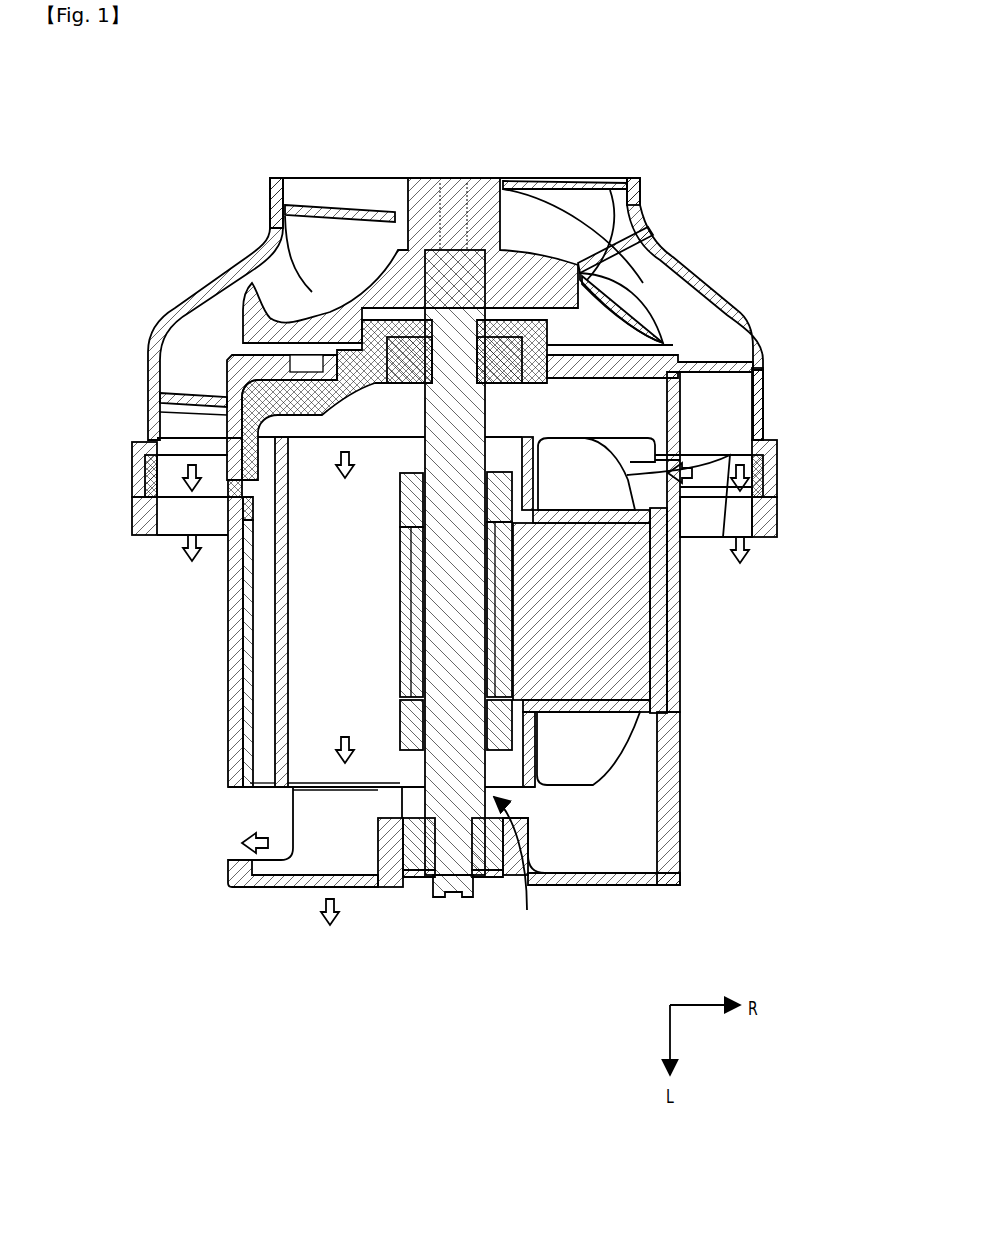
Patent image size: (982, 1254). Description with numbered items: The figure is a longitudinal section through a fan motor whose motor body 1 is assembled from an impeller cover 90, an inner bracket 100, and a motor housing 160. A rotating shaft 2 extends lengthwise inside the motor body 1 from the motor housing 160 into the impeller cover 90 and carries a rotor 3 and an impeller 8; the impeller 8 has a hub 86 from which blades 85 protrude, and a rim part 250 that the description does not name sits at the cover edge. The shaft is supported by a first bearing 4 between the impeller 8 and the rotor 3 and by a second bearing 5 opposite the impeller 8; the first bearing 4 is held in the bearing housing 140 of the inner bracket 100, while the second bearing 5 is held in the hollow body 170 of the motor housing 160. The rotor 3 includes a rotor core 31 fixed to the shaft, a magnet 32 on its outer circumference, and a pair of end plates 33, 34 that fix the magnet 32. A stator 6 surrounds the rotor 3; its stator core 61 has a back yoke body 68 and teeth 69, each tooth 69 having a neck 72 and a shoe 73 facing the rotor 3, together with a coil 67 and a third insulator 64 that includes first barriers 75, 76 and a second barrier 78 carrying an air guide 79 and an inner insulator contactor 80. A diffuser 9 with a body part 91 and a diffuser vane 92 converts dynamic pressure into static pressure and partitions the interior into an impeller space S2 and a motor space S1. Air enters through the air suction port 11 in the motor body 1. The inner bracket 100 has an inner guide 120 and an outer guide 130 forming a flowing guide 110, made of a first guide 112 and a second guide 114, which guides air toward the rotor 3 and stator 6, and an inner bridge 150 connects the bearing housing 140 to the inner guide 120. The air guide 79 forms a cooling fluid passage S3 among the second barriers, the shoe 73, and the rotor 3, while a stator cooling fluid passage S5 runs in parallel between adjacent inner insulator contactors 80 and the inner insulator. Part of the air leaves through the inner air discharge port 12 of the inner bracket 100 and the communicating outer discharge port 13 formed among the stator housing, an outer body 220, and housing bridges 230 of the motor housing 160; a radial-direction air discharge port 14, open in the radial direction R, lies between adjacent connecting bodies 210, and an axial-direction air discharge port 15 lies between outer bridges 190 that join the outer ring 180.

The motor body 1 is at (798, 316).
The rotating shaft 2 is at (450, 183).
The rotor 3 is at (321, 611).
The first bearing 4 is at (500, 348).
The second bearing 5 is at (485, 862).
The stator 6 is at (582, 430).
The impeller 8 is at (453, 211).
The diffuser 9 is at (676, 332).
The air suction port 11 is at (295, 185).
The air discharge port 12 is at (180, 484).
The air discharge port 13 is at (180, 528).
The radial-direction air discharge port 14 is at (237, 846).
The axial-direction air discharge port 15 is at (315, 887).
The rotor core 31 is at (417, 617).
The magnet 32 is at (407, 592).
The end plate 33 is at (400, 715).
The end plate 34 is at (407, 490).
The stator core 61 is at (671, 610).
The third insulator 64 is at (651, 743).
The coil 67 is at (673, 776).
The back yoke body 68 is at (665, 660).
The tooth 69 is at (652, 605).
The neck 72 is at (517, 567).
The shoe 73 is at (587, 617).
The first barrier 75 is at (600, 705).
The first barrier 76 is at (545, 752).
The second barrier 78 is at (217, 642).
The air guide 79 is at (297, 727).
The inner insulator contactor 80 is at (258, 710).
The blade 85 is at (325, 200).
The hub 86 is at (365, 205).
The impeller cover 90 is at (268, 233).
The body part 91 is at (722, 360).
The diffuser vane 92 is at (738, 335).
The inner bracket 100 is at (83, 471).
The flowing guide 110 is at (848, 410).
The first guide 112 is at (698, 470).
The second guide 114 is at (663, 460).
The inner guide 120 is at (250, 468).
The outer guide 130 is at (148, 471).
The bearing housing 140 is at (272, 270).
The inner bridge 150 is at (258, 325).
The motor housing 160 is at (546, 838).
The hollow body 170 is at (530, 832).
The outer ring 180 is at (660, 874).
The outer bridge 190 is at (600, 887).
The connecting body 210 is at (672, 802).
The outer body 220 is at (763, 537).
The housing bridge 230 is at (740, 503).
The cover rim 250 is at (637, 178).
The motor space S1 is at (320, 812).
The impeller space S2 is at (700, 318).
The cooling fluid passage S3 is at (312, 763).
The stator cooling fluid passage S5 is at (262, 762).
The radial direction R is at (525, 865).